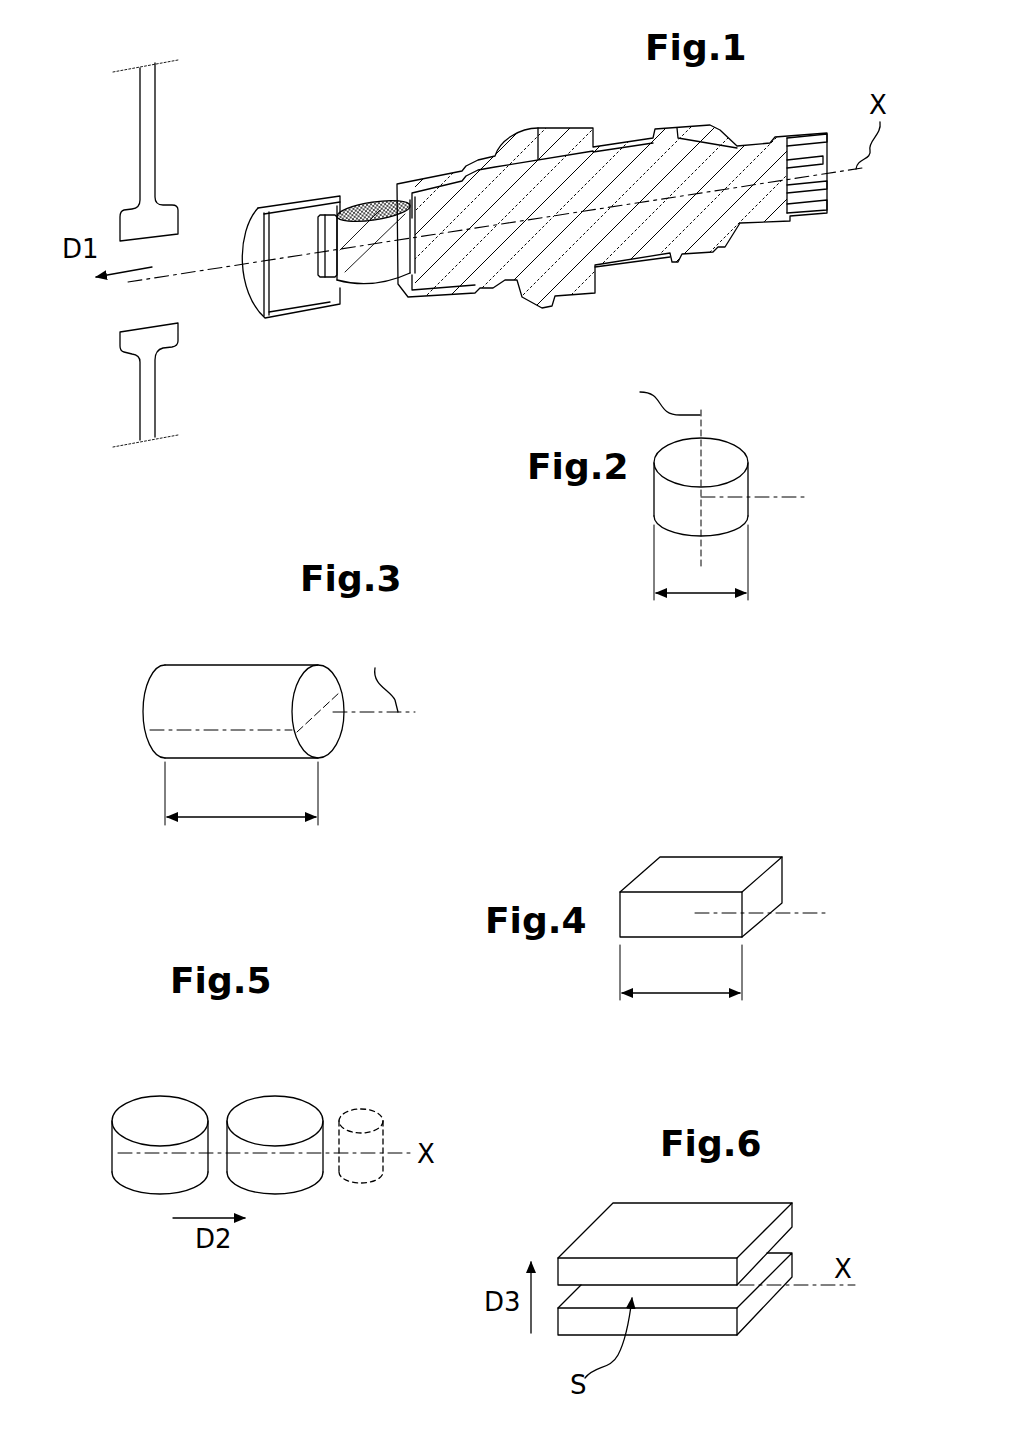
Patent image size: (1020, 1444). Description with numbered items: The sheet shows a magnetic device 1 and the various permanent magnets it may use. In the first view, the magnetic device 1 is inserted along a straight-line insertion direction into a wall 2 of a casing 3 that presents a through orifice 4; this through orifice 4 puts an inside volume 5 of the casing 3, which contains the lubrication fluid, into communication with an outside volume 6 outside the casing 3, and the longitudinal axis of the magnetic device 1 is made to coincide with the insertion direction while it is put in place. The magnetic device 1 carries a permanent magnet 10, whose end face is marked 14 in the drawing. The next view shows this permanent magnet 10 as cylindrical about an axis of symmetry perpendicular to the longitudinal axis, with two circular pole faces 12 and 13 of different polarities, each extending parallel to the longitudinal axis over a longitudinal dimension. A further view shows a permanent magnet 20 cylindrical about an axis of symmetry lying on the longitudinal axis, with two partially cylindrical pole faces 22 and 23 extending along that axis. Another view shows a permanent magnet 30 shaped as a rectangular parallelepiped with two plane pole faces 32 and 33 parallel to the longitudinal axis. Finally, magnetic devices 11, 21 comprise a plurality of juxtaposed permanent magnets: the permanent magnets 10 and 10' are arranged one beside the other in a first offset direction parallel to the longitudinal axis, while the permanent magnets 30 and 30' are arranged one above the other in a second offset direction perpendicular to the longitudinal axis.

In FIG. 1, the magnetic device 1 is at (300, 170).
In FIG. 1, the wall 2 is at (147, 140).
In FIG. 1, the casing 3 is at (168, 95).
In FIG. 1, the through orifice 4 is at (168, 250).
In FIG. 1, the inside volume 5 is at (93, 326).
In FIG. 1, the outside volume 6 is at (206, 319).
In FIG. 1, the permanent magnet 10 is at (364, 276).
In FIG. 2, the permanent magnet 10 is at (731, 502).
In FIG. 5, the permanent magnet 10 is at (125, 1119).
In FIG. 5, the permanent magnet 10' is at (334, 1086).
In FIG. 5, the magnetic device 11 is at (146, 1050).
In FIG. 2, the pole face 12 is at (716, 452).
In FIG. 2, the pole face 13 is at (724, 549).
In FIG. 1, the marked end face of magnet 14 is at (372, 196).
In FIG. 3, the permanent magnet 20 is at (128, 670).
In FIG. 6, the magnetic device 21 is at (594, 1195).
In FIG. 3, the pole face 22 is at (260, 676).
In FIG. 3, the pole face 23 is at (298, 762).
In FIG. 4, the permanent magnet 30 is at (697, 917).
In FIG. 6, the permanent magnet 30 is at (697, 1330).
In FIG. 6, the permanent magnet 30' is at (722, 1218).
In FIG. 4, the pole face 32 is at (742, 866).
In FIG. 4, the pole face 33 is at (775, 932).